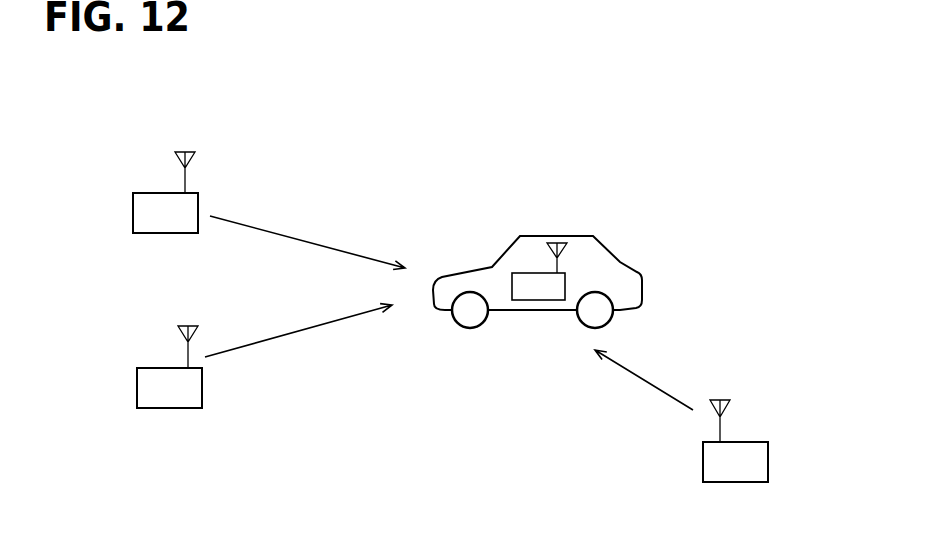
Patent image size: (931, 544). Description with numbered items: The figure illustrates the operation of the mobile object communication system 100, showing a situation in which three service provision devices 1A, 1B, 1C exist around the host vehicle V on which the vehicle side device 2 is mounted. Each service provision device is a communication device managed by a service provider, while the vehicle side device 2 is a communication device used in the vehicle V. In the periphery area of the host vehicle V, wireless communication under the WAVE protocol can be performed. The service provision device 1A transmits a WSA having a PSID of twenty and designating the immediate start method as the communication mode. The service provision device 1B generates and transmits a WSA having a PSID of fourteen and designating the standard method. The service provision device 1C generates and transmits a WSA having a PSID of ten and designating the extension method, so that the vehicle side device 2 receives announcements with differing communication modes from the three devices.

The mobile object communication system 100 is at (211, 101).
The service provision device 1A is at (153, 193).
The service provision device 1B is at (156, 368).
The service provision device 1C is at (752, 442).
The vehicle V is at (583, 236).
The vehicle side device 2 is at (520, 273).